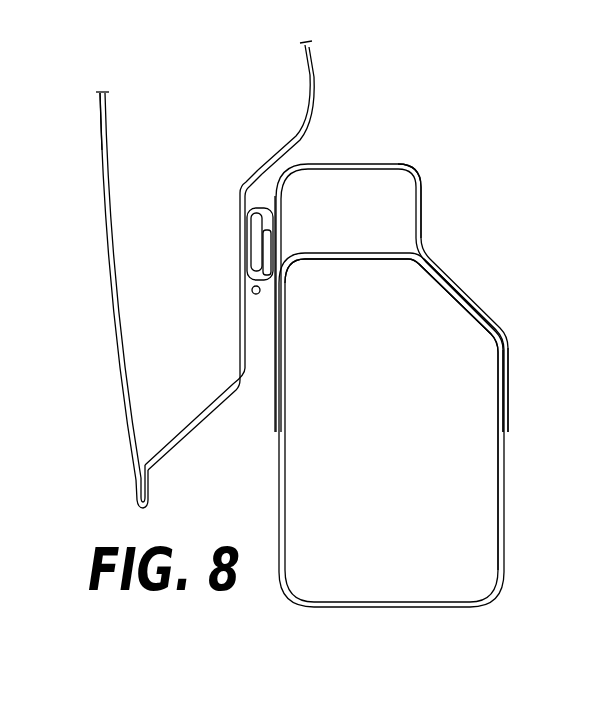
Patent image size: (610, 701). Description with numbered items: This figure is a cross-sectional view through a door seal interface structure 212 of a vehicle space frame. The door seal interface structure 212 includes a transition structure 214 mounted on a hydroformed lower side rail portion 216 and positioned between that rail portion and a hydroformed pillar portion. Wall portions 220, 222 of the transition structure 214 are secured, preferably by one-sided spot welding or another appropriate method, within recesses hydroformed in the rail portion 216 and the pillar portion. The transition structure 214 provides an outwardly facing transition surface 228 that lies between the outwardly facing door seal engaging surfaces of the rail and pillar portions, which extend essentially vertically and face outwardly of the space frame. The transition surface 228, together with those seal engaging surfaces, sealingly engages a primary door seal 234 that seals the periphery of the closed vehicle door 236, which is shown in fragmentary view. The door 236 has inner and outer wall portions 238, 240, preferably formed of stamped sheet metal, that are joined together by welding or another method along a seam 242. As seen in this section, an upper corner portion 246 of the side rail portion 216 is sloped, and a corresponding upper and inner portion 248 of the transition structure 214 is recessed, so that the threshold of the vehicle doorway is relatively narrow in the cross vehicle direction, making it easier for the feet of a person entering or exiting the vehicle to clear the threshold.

The door seal interface structure 212 is at (423, 137).
The transition structure 214 is at (423, 178).
The hydroformed lower side rail portion 216 is at (505, 468).
The wall portion 220 is at (277, 418).
The wall portion 222 is at (508, 353).
The transition surface 228 is at (262, 192).
The primary door seal 234 is at (277, 222).
The vehicle door 236 is at (106, 228).
The inner wall portion 238 is at (107, 137).
The outer wall portion 240 is at (283, 145).
The seam 242 is at (143, 477).
The upper corner portion 246 is at (467, 303).
The upper and inner portion 248 is at (487, 269).